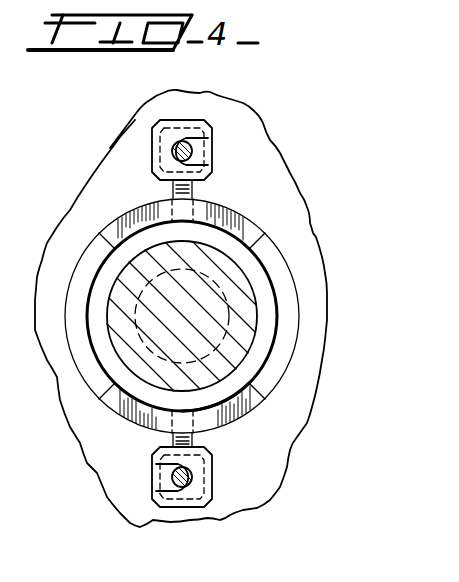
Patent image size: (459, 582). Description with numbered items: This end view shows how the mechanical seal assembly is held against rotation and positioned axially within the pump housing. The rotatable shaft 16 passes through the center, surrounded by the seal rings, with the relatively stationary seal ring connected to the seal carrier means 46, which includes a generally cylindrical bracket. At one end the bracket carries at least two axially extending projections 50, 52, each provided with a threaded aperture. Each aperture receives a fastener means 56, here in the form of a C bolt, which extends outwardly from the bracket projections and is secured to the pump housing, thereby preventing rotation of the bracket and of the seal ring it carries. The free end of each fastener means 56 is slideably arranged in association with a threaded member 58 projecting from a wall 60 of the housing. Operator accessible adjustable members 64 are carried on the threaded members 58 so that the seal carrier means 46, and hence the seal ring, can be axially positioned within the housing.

The shaft 16 is at (248, 313).
The seal carrier means 46 is at (123, 198).
The projection 50 is at (243, 222).
The projection 52 is at (223, 425).
The fastener means 56 is at (168, 122).
The threaded member 58 is at (205, 148).
The wall 60 is at (300, 235).
The adjustable member 64 is at (207, 149).